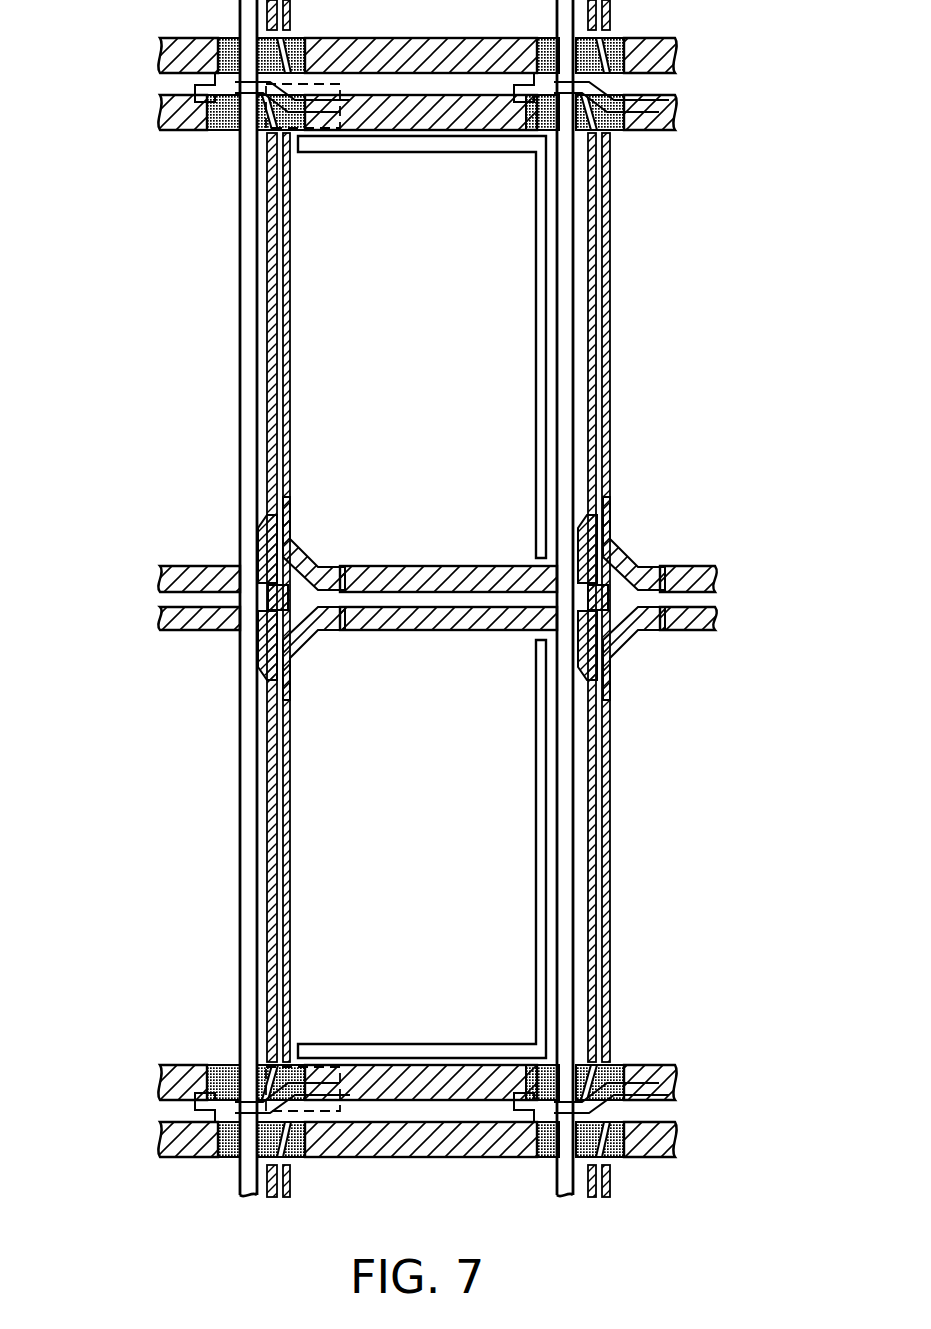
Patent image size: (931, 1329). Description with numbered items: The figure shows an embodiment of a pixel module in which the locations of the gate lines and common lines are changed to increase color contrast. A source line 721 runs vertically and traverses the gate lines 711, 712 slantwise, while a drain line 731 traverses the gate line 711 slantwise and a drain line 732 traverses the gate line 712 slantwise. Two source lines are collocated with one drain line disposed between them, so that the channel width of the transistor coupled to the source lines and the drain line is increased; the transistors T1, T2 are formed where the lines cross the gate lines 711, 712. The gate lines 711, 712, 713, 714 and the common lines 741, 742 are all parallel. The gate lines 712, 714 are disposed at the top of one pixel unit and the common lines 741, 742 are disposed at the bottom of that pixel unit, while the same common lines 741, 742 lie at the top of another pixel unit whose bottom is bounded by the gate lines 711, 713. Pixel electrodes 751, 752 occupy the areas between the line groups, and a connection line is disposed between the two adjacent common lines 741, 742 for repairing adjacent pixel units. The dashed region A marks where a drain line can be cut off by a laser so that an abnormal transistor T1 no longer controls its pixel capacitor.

The gate line 711 is at (183, 1078).
The gate line 712 is at (185, 105).
The gate line 713 is at (183, 1133).
The gate line 714 is at (185, 48).
The source line 721 is at (248, 315).
The drain line 731 is at (265, 628).
The drain line 732 is at (268, 128).
The common line 741 is at (183, 612).
The common line 742 is at (183, 570).
The first pixel electrode 751 is at (540, 841).
The second pixel electrode 752 is at (540, 316).
The transistor T1 is at (205, 1066).
The transistor T2 is at (203, 136).
The region A is at (270, 1062).